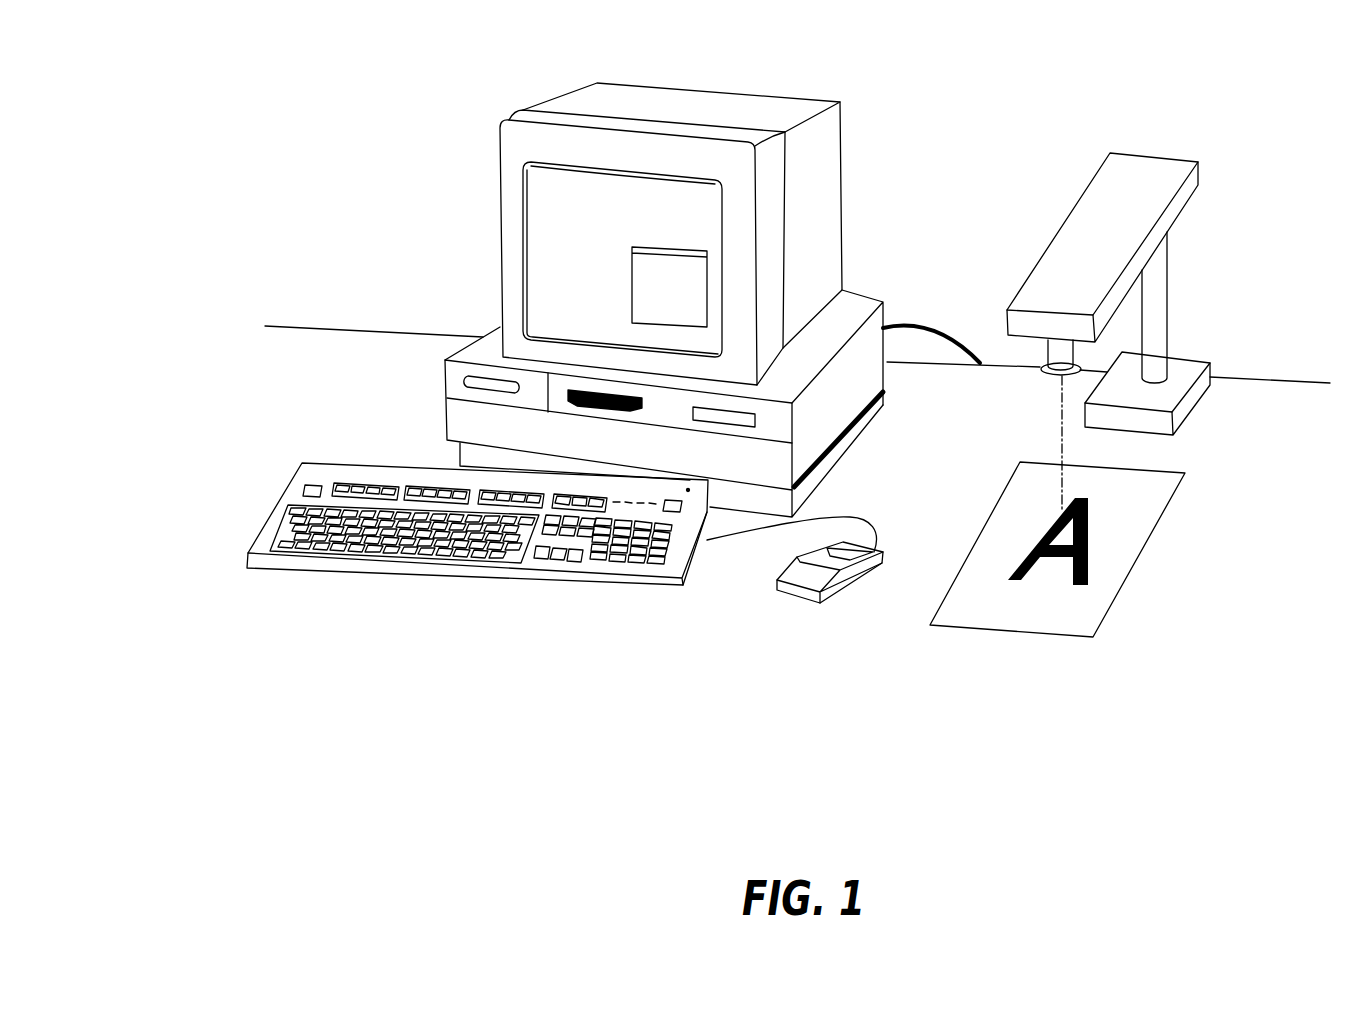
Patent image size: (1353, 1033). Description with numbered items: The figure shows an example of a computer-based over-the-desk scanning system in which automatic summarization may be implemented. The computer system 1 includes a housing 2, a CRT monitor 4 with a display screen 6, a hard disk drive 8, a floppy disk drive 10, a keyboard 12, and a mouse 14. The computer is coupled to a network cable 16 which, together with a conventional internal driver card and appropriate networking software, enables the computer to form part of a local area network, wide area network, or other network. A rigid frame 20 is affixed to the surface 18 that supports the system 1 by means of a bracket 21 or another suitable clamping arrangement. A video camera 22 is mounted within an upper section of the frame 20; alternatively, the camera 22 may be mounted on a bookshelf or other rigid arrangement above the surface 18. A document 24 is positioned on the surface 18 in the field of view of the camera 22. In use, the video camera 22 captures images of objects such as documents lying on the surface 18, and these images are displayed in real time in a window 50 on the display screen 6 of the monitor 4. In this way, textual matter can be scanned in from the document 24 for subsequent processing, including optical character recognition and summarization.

The computer system 1 is at (446, 257).
The housing 2 is at (868, 372).
The CRT monitor 4 is at (555, 98).
The display screen 6 is at (535, 203).
The hard disk drive 8 is at (760, 420).
The floppy disk drive 10 is at (601, 413).
The keyboard 12 is at (397, 473).
The mouse 14 is at (855, 575).
The network cable 16 is at (935, 325).
The surface 18 is at (1263, 393).
The rigid frame 20 is at (1170, 302).
The bracket 21 is at (1193, 354).
The video camera 22 is at (1047, 353).
The document 24 is at (1145, 508).
The window 50 is at (652, 248).